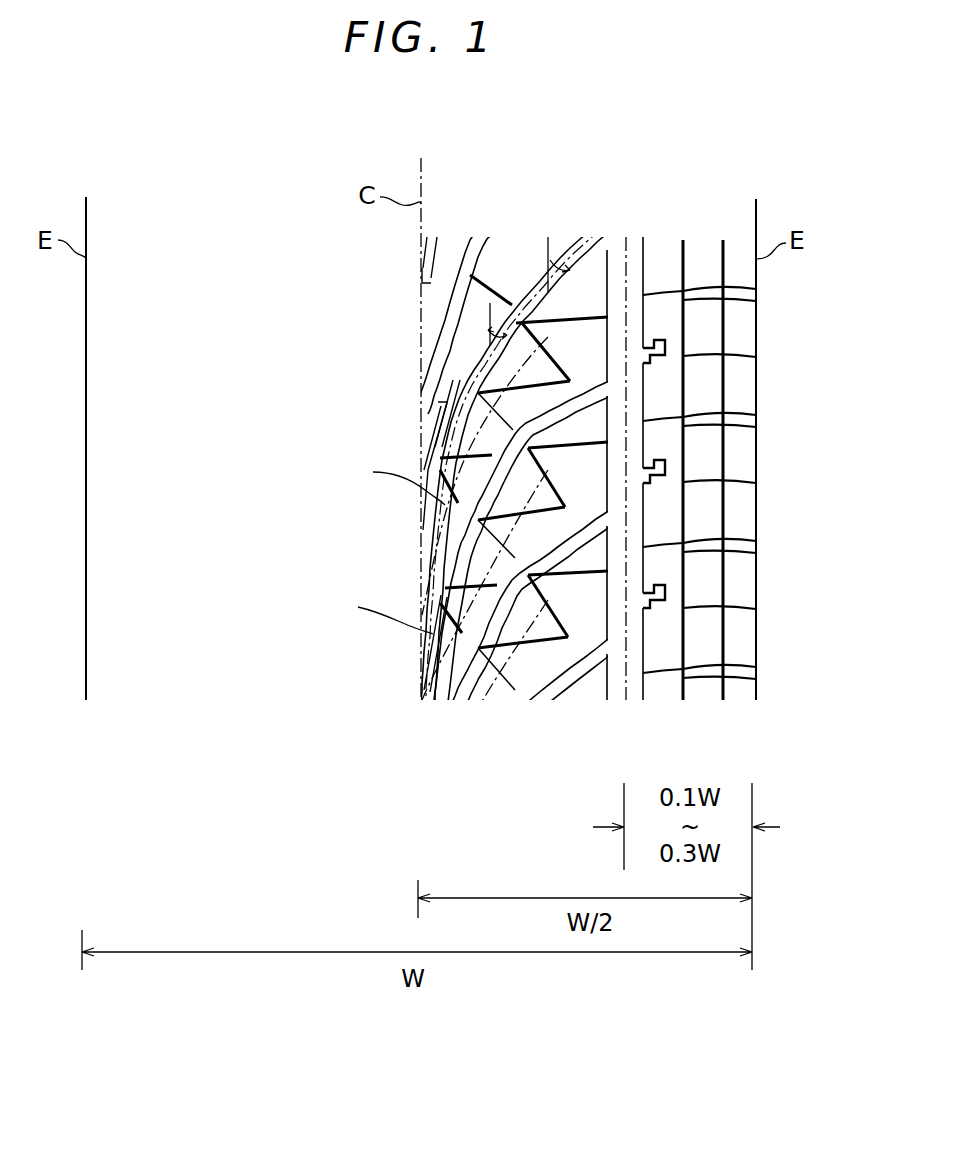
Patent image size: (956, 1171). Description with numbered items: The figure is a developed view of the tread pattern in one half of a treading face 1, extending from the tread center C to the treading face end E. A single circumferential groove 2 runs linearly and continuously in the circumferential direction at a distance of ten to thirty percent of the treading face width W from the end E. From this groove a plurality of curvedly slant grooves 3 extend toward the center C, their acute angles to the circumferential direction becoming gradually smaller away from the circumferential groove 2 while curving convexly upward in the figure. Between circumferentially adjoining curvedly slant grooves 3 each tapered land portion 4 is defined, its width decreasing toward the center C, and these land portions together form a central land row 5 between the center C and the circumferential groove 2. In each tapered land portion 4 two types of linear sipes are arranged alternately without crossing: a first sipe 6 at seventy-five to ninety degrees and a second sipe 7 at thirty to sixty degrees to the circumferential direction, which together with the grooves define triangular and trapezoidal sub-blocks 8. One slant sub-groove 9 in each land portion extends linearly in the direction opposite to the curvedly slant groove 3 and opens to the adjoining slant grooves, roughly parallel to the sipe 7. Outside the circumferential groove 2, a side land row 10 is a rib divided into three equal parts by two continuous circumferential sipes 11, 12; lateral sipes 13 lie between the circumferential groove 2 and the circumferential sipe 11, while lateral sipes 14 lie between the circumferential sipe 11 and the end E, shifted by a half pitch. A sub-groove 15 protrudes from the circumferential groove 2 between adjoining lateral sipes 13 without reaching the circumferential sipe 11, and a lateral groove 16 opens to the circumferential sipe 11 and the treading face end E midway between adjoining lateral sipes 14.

The treading face 1 is at (86, 152).
The circumferential groove 2 is at (632, 690).
The curvedly slant groove 3 is at (500, 350).
The tapered land portion 4 is at (612, 387).
The central land row 5 is at (474, 496).
The sipe of first type 6 is at (604, 312).
The sipe of second type 7 is at (538, 337).
The sub-block 8 is at (577, 314).
The slant sub-groove 9 is at (477, 287).
The side land row 10 is at (756, 708).
The circumferential sipe 11 is at (684, 241).
The circumferential sipe 12 is at (725, 243).
The lateral sipe 13 is at (653, 290).
The lateral sipe 14 is at (700, 478).
The sub-groove 15 is at (653, 346).
The lateral groove 16 is at (746, 421).